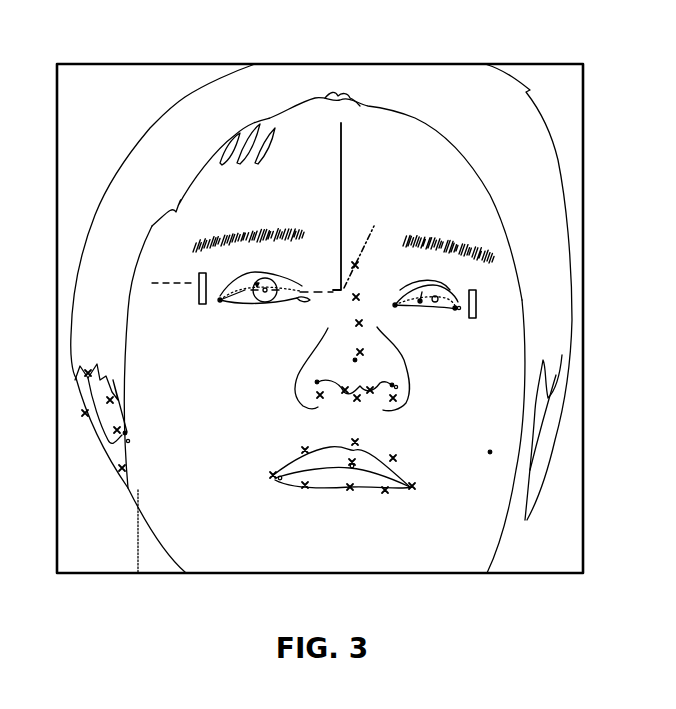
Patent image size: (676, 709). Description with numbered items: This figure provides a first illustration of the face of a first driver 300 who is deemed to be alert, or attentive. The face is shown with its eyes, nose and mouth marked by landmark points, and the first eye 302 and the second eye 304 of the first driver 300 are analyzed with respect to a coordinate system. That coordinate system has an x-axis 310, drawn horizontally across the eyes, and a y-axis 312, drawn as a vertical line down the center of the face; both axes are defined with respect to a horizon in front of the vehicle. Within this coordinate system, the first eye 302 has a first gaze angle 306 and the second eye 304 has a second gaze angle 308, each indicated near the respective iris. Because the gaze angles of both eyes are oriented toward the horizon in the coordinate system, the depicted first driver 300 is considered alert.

The first driver 300 is at (118, 44).
The first eye 302 is at (228, 300).
The second eye 304 is at (440, 312).
The first gaze angle 306 is at (265, 288).
The second gaze angle 308 is at (450, 267).
The x-axis 310 is at (323, 293).
The y-axis 312 is at (341, 176).